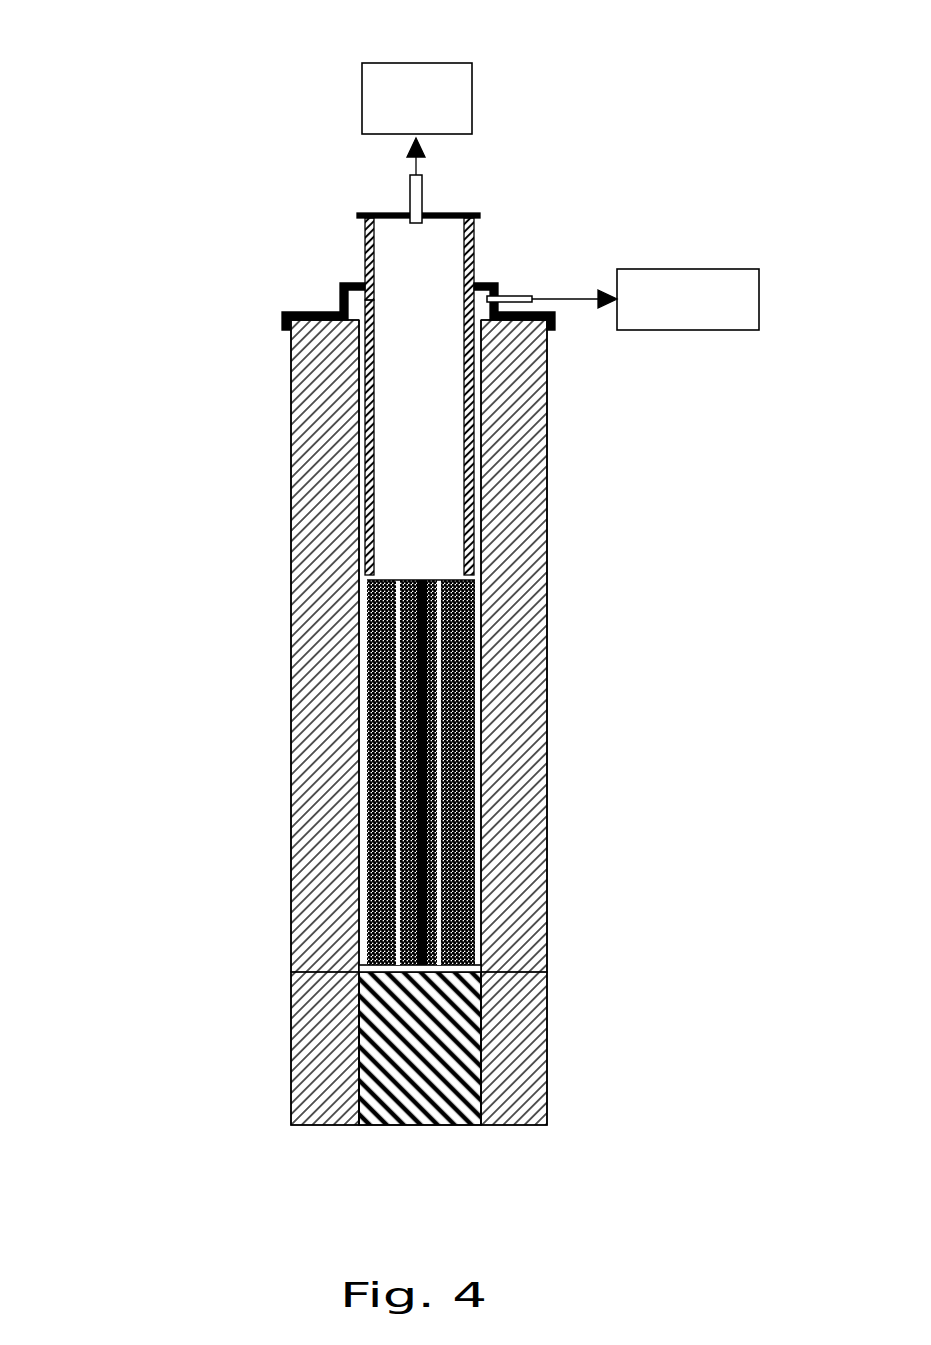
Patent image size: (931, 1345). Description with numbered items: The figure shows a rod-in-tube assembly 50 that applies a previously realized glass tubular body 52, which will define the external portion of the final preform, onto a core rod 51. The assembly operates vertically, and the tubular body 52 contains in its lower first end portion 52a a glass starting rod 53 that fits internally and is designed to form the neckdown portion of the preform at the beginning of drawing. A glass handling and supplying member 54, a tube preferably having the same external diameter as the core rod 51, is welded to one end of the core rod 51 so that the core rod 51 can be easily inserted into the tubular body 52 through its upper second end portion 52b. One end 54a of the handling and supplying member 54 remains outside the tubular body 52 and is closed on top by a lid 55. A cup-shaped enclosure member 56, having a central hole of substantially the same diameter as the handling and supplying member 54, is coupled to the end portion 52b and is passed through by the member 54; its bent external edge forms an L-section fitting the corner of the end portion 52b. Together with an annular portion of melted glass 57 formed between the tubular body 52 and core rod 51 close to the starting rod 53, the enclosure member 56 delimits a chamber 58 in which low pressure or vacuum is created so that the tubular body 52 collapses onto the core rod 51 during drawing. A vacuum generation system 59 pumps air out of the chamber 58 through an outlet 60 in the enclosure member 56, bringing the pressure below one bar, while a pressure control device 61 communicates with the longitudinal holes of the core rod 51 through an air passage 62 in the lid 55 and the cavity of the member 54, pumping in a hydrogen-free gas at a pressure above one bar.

The rod-in-tube assembly 50 is at (690, 120).
The core rod 51 is at (480, 730).
The tubular body 52 is at (411, 724).
The first end portion 52a is at (315, 1093).
The second end portion 52b is at (525, 345).
The starting rod 53 is at (457, 1028).
The handling and supplying member 54 is at (406, 396).
The end of handling and supplying member 54a is at (360, 237).
The lid 55 is at (440, 213).
The cup-shaped enclosure member 56 is at (323, 313).
The annular portion of melted glass 57 is at (360, 970).
The chamber 58 is at (372, 630).
The vacuum generation system 59 is at (759, 299).
The outlet 60 is at (512, 293).
The pressure control device 61 is at (380, 97).
The air passage 62 is at (430, 188).